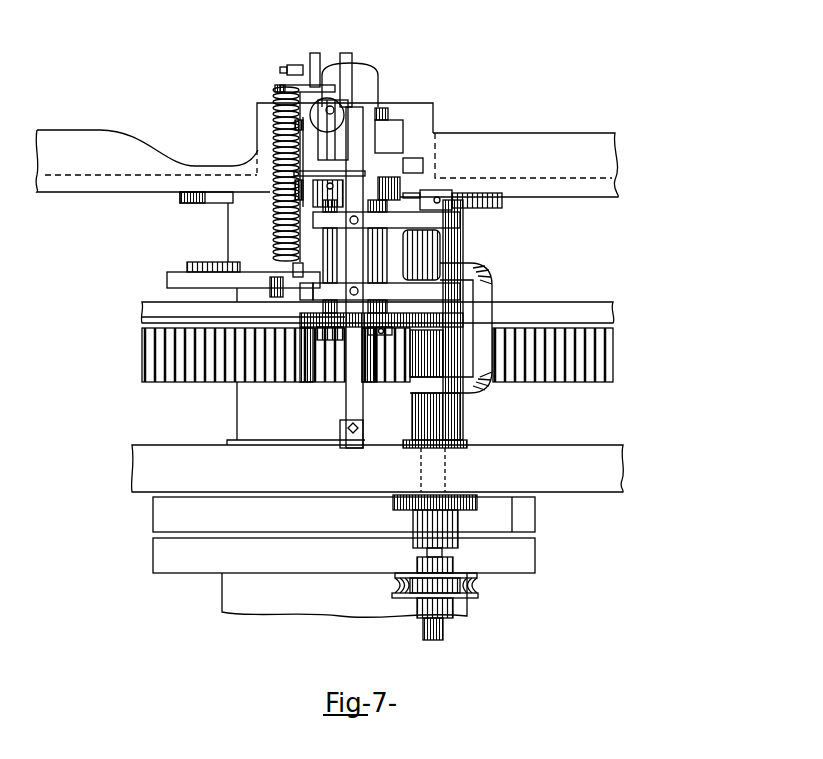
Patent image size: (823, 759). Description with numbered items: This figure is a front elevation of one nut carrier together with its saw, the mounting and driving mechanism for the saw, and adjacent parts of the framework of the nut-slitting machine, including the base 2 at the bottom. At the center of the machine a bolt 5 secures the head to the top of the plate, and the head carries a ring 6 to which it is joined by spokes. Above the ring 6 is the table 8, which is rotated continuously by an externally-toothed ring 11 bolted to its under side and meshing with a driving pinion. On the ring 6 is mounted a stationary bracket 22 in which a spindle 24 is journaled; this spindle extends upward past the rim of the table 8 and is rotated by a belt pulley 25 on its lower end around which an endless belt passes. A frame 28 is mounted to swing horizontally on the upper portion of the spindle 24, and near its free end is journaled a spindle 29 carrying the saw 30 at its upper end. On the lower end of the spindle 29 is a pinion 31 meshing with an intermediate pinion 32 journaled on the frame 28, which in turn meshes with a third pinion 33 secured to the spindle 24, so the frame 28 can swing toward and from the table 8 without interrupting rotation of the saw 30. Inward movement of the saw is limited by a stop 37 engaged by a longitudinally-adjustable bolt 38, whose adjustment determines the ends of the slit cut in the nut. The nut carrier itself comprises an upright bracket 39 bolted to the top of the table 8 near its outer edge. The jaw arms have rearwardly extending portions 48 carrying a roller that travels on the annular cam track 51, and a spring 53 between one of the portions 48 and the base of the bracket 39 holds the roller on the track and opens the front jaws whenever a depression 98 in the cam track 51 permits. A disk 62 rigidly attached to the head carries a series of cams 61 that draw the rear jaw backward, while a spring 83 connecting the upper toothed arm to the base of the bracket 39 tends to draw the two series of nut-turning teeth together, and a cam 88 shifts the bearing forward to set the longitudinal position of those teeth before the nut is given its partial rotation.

The base 2 is at (344, 595).
The bolt 5 is at (380, 80).
The ring 6 is at (378, 468).
The table 8 is at (140, 307).
The externally-toothed ring 11 is at (142, 361).
The stationary bracket 22 is at (477, 383).
The spindle 24 is at (445, 357).
The belt pulley 25 is at (470, 585).
The frame 28 is at (410, 224).
The spindle 29 is at (332, 340).
The saw 30 is at (272, 205).
The pinion 31 is at (300, 317).
The intermediate pinion 32 is at (380, 335).
The third pinion 33 is at (463, 312).
The stop 37 is at (350, 443).
The longitudinally-adjustable bolt 38 is at (358, 426).
The upright bracket 39 is at (388, 117).
The rearwardly extending portions 48 is at (312, 52).
The annular cam track 51 is at (509, 165).
The spring 53 is at (277, 247).
The cam 61 is at (197, 262).
The disk 62 is at (165, 278).
The spring 83 is at (268, 114).
The cam 88 is at (197, 203).
The depression 98 is at (187, 163).